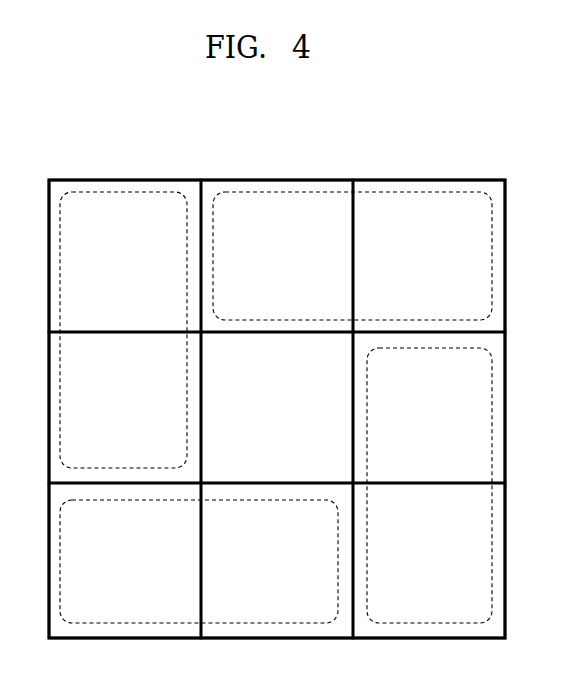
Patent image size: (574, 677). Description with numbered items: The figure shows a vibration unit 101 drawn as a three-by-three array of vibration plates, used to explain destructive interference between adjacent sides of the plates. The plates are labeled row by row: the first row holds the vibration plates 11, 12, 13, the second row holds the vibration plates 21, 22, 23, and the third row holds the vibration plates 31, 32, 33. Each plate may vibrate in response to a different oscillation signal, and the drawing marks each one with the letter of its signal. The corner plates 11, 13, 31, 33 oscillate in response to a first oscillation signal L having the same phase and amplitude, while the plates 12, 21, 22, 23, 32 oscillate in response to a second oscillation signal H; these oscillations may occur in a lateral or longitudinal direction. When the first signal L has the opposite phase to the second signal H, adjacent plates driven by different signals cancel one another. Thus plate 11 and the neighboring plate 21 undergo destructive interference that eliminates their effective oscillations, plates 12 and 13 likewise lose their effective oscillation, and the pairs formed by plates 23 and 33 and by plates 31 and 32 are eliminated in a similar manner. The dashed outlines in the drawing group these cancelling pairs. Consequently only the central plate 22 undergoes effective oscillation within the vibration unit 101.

The vibration unit 101 is at (460, 180).
The vibration plate [1,1] 11 is at (125, 256).
The vibration plate [1,2] 12 is at (277, 256).
The vibration plate [1,3] 13 is at (429, 256).
The vibration plate [2,1] 21 is at (125, 407).
The vibration plate [2,2] 22 is at (277, 407).
The vibration plate [2,3] 23 is at (429, 407).
The vibration plate [3,1] 31 is at (125, 560).
The vibration plate [3,2] 32 is at (277, 560).
The vibration plate [3,3] 33 is at (429, 560).